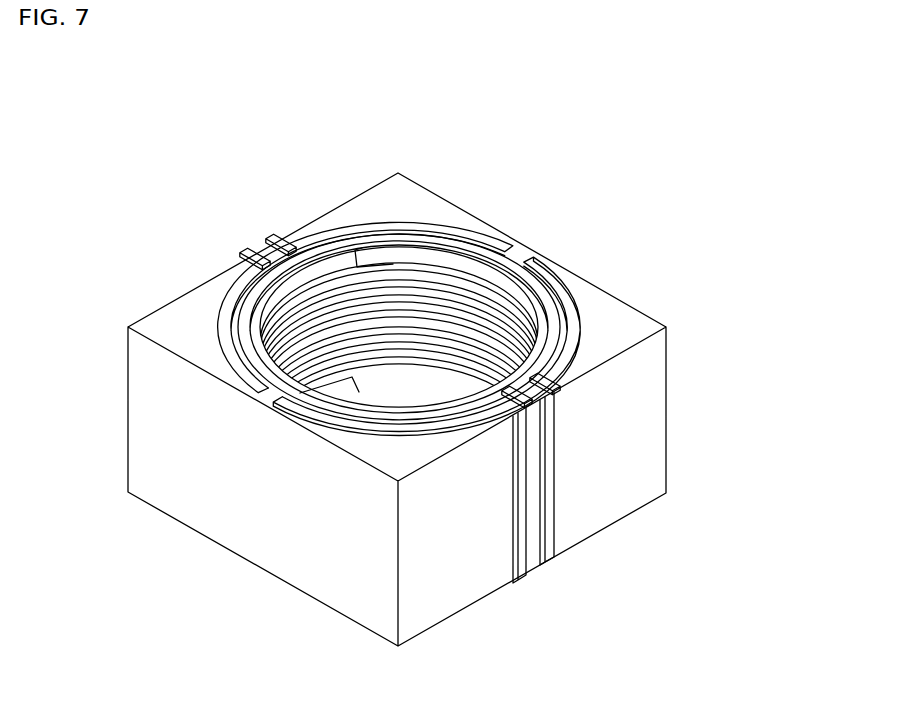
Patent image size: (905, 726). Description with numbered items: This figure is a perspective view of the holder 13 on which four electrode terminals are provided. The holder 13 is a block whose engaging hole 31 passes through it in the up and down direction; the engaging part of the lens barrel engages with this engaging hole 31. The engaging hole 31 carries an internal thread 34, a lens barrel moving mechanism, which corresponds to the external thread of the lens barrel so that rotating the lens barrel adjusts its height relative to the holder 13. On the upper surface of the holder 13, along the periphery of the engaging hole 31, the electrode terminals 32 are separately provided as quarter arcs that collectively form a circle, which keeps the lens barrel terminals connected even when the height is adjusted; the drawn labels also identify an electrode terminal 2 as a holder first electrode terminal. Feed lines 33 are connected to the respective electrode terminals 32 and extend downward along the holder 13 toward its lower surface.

The electrode terminal (holder first electrode terminal) 2 is at (299, 403).
The holder 13 is at (660, 415).
The engaging hole 31 is at (452, 283).
The electrode terminal 32 is at (555, 288).
The feed line 33 is at (281, 237).
The internal thread (lens barrel moving mechanism) 34 is at (434, 358).